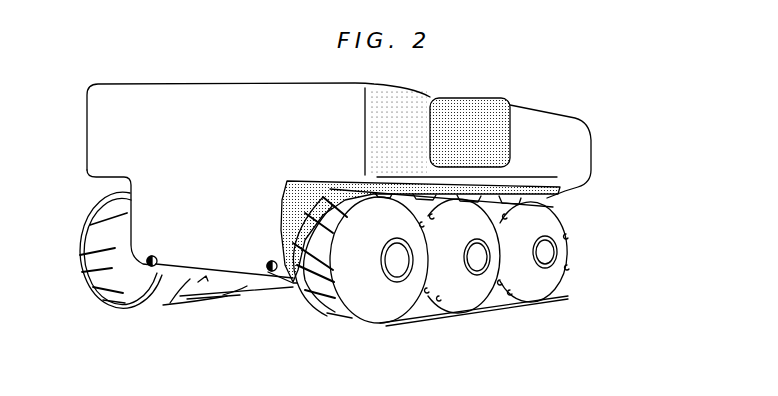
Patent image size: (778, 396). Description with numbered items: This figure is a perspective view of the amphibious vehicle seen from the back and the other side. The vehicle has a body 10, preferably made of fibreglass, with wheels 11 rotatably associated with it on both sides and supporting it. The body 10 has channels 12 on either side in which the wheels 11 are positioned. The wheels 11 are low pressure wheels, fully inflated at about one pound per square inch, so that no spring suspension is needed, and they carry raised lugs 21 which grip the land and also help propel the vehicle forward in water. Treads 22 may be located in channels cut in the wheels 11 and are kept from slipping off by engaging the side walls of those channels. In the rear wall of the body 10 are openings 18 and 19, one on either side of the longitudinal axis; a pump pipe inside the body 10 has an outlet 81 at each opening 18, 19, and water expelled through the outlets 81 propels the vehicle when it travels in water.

The body 10 is at (270, 75).
The wheels 11 is at (324, 283).
The channels 12 is at (308, 192).
The opening 18 is at (152, 266).
The opening 19 is at (268, 273).
The raised lugs 21 is at (419, 209).
The treads 22 is at (492, 203).
The outlet 81 is at (153, 256).